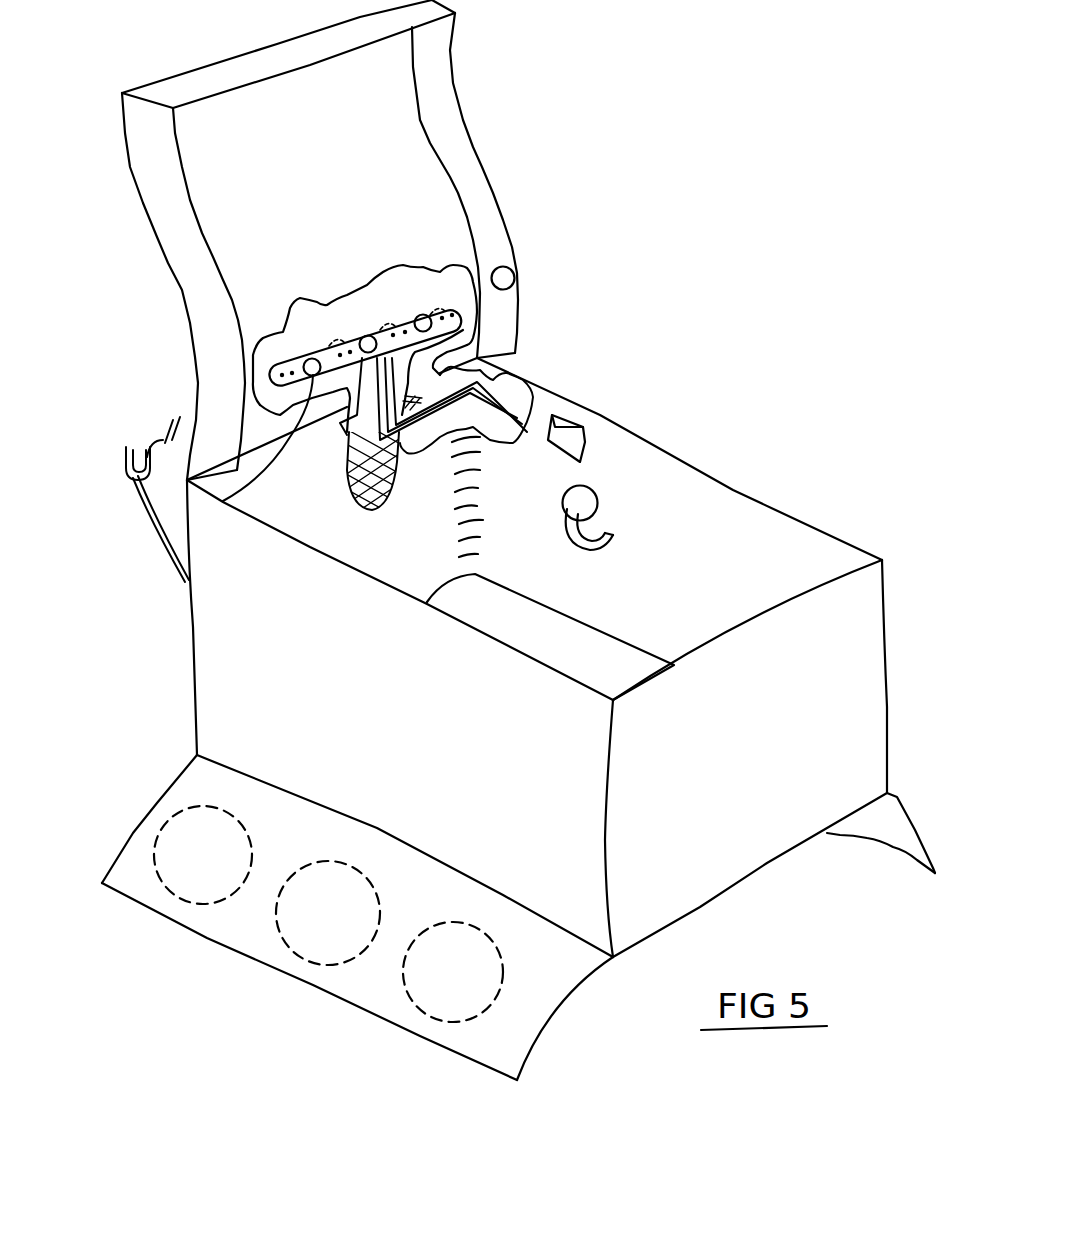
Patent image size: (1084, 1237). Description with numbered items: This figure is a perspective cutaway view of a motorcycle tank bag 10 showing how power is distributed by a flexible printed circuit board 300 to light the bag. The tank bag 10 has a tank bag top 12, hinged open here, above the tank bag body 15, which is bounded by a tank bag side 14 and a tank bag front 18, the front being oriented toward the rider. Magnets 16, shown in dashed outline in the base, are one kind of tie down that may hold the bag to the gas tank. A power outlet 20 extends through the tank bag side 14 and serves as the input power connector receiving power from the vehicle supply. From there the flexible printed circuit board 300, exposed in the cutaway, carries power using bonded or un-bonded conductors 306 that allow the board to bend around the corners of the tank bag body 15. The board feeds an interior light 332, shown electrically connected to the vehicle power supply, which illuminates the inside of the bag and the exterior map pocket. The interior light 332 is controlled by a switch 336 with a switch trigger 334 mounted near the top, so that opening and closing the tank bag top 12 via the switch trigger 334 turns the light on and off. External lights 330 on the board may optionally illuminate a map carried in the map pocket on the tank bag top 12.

The motorcycle tank bag 10 is at (170, 638).
The tank bag top 12 is at (472, 157).
The tank bag side 14 is at (798, 507).
The tank bag body 15 is at (473, 560).
The magnets 16 is at (198, 856).
The tank bag front 18 is at (735, 852).
The power outlet 20 is at (595, 495).
The flexible printed circuit board 300 is at (347, 492).
The conductors 306 is at (360, 437).
The external lights 330 is at (313, 362).
The interior light 332 is at (223, 501).
The switch trigger 334 is at (514, 277).
The switch 336 is at (567, 420).